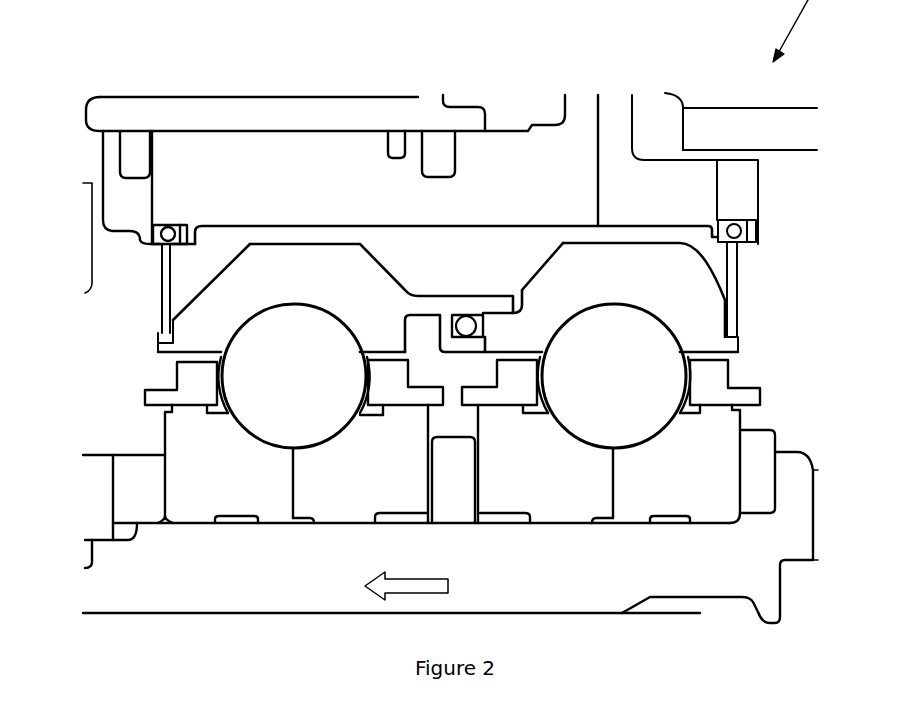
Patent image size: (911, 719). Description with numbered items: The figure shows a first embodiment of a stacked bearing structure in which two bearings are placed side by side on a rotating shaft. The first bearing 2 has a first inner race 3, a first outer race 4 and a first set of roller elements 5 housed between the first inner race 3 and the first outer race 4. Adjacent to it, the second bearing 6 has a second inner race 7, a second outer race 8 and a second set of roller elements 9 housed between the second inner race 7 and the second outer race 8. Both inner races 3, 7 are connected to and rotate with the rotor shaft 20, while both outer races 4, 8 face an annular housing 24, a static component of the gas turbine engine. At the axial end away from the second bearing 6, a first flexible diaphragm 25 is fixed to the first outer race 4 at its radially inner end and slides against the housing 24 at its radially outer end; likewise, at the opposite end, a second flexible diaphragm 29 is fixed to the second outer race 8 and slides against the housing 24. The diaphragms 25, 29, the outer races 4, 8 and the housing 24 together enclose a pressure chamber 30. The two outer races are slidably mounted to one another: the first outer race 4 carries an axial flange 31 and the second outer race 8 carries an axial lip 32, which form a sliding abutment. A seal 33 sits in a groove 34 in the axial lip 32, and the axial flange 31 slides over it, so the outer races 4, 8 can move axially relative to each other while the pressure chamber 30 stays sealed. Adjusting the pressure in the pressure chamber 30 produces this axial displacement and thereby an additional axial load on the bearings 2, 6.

The first bearing 2 is at (205, 537).
The first inner race 3 is at (202, 479).
The first outer race 4 is at (230, 303).
The first set of roller elements 5 is at (286, 383).
The second bearing 6 is at (645, 541).
The second inner race 7 is at (700, 462).
The second outer race 8 is at (690, 281).
The second set of roller elements 9 is at (605, 383).
The rotor shaft 20 is at (545, 576).
The annular housing 24 is at (180, 163).
The first flexible diaphragm 25 is at (160, 296).
The second flexible diaphragm 29 is at (733, 325).
The pressure chamber 30 is at (436, 264).
The axial flange 31 is at (427, 307).
The axial lip 32 is at (477, 345).
The seal 33 is at (466, 325).
The groove 34 is at (483, 322).